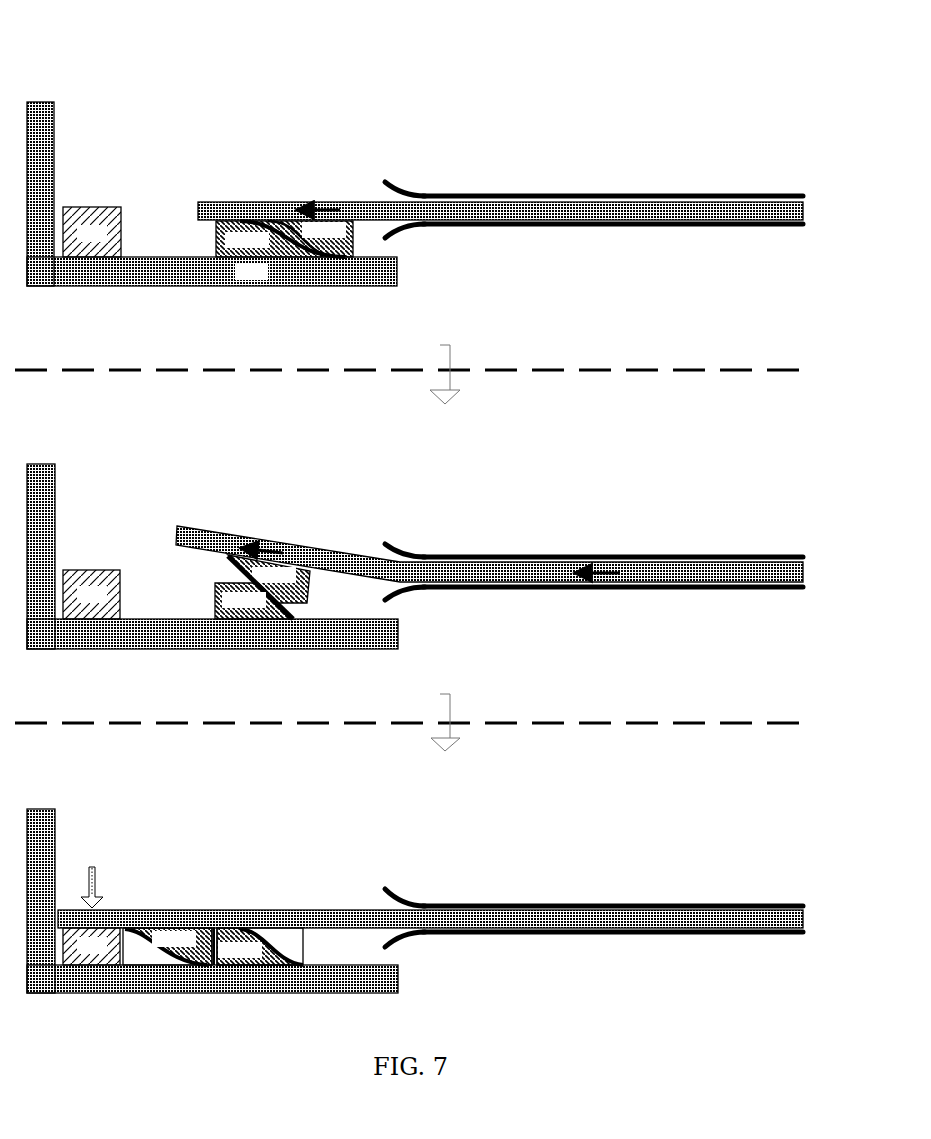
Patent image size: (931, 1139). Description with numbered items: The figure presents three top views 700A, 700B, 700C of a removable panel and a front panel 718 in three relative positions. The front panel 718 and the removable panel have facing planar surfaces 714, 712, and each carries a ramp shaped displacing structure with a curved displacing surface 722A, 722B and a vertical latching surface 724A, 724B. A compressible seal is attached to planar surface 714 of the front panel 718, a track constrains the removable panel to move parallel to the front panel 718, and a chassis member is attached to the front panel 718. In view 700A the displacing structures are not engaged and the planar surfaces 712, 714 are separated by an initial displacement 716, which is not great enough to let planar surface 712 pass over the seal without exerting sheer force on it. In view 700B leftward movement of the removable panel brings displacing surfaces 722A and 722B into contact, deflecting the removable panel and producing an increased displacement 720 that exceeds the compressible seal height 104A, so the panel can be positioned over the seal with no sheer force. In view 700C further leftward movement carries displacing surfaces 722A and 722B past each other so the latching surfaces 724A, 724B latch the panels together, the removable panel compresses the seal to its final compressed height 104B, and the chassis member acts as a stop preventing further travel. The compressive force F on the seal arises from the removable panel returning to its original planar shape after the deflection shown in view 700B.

The first top view 700A is at (108, 50).
The second top view 700B is at (108, 433).
The third top view 700C is at (108, 783).
The compressible seal height 104A is at (151, 208).
The final displacement 104B is at (317, 928).
The initial displacement 716 is at (201, 220).
The front panel 718 is at (266, 280).
The planar surface 712 is at (376, 224).
The planar surface 714 is at (400, 258).
The vertical latching surface 724A is at (217, 233).
The vertical latching surface 724B is at (353, 248).
The increased displacement 720 is at (168, 545).
The curved displacing surface 722A is at (293, 612).
The curved displacing surface 722B is at (233, 567).